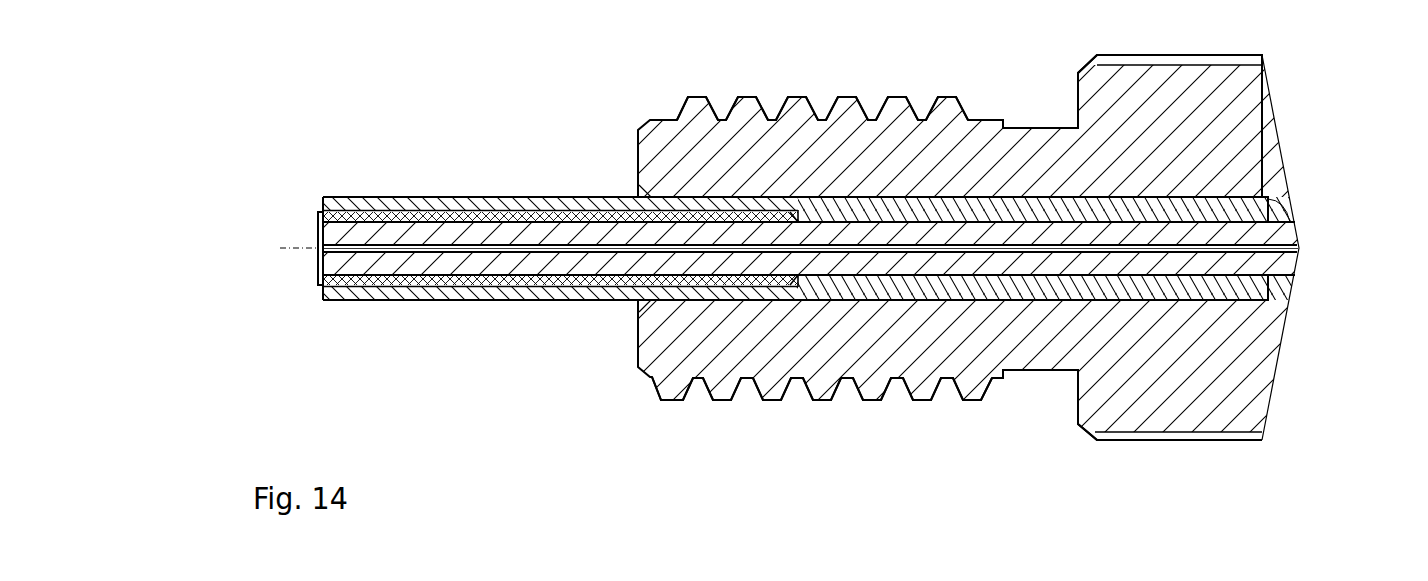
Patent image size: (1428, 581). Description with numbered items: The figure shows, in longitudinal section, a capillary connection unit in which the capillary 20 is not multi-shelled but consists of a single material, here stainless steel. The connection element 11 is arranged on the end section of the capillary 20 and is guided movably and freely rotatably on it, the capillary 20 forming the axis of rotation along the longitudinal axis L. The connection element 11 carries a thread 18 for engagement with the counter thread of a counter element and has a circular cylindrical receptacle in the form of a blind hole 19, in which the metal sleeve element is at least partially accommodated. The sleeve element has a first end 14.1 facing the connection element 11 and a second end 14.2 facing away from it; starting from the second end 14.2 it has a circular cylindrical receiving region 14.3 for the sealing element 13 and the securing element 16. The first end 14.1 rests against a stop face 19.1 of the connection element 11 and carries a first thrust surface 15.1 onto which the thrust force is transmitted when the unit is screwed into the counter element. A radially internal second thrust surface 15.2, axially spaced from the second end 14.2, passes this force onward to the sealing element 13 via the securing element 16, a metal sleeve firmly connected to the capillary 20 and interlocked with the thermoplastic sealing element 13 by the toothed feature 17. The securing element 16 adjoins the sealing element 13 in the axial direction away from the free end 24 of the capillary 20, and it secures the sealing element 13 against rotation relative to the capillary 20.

The connection element 11 is at (1190, 62).
The sealing element 13 is at (377, 208).
The first end 14.1 is at (1274, 203).
The second end 14.2 is at (322, 290).
The receiving region 14.3 is at (507, 301).
The first thrust surface 15.1 is at (1290, 210).
The second thrust surface 15.2 is at (797, 279).
The securing element 16 is at (593, 208).
The toothed feature 17 is at (540, 217).
The thread 18 is at (898, 96).
The blind hole 19 is at (1027, 310).
The stop face 19.1 is at (1238, 294).
The capillary 20 is at (1298, 236).
The free end 24 is at (317, 232).
The longitudinal axis L is at (432, 247).